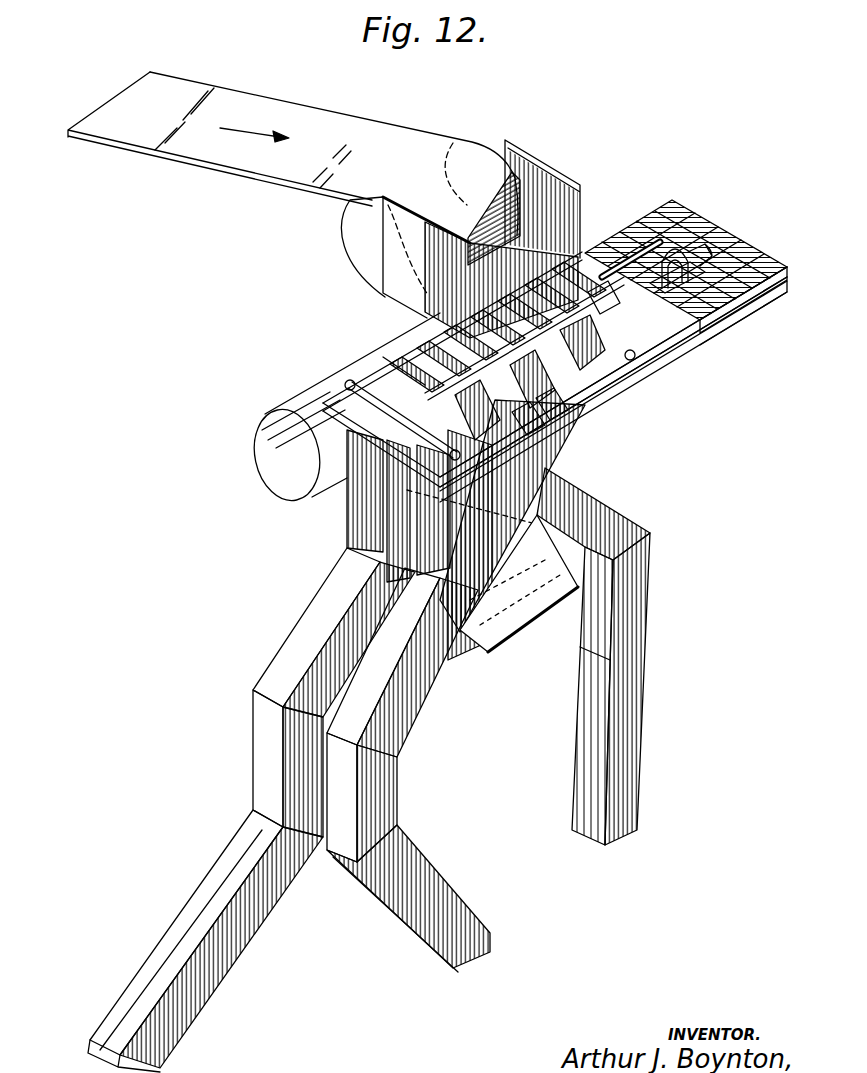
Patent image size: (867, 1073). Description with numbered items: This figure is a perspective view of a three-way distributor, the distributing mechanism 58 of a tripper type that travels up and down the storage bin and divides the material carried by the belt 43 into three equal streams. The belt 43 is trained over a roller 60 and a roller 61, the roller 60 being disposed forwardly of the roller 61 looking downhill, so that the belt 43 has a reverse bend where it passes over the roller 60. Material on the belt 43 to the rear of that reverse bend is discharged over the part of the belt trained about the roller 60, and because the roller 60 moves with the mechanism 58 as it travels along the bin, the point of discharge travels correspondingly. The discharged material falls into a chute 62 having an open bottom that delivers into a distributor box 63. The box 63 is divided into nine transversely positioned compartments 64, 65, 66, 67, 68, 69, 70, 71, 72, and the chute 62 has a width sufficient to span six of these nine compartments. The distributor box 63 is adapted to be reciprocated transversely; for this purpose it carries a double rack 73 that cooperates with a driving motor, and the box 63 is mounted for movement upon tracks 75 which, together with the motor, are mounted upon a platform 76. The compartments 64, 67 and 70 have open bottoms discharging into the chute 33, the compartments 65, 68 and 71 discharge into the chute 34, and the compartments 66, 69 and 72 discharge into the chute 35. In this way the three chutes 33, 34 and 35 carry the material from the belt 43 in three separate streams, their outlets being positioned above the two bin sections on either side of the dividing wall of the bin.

The chute 33 is at (642, 636).
The chute 34 is at (400, 709).
The chute 35 is at (260, 750).
The belt 43 is at (362, 128).
The distributing mechanism 58 is at (385, 352).
The roller 60 is at (352, 240).
The roller 61 is at (275, 476).
The chute 62 is at (572, 196).
The distributor box 63 is at (606, 303).
The compartment 64 is at (612, 370).
The compartment 65 is at (600, 388).
The compartment 66 is at (585, 399).
The compartment 67 is at (555, 415).
The compartment 68 is at (530, 430).
The compartment 69 is at (473, 545).
The compartment 70 is at (434, 510).
The compartment 71 is at (690, 252).
The compartment 72 is at (365, 491).
The double rack 73 is at (632, 262).
The tracks 75 is at (340, 390).
The platform 76 is at (733, 237).